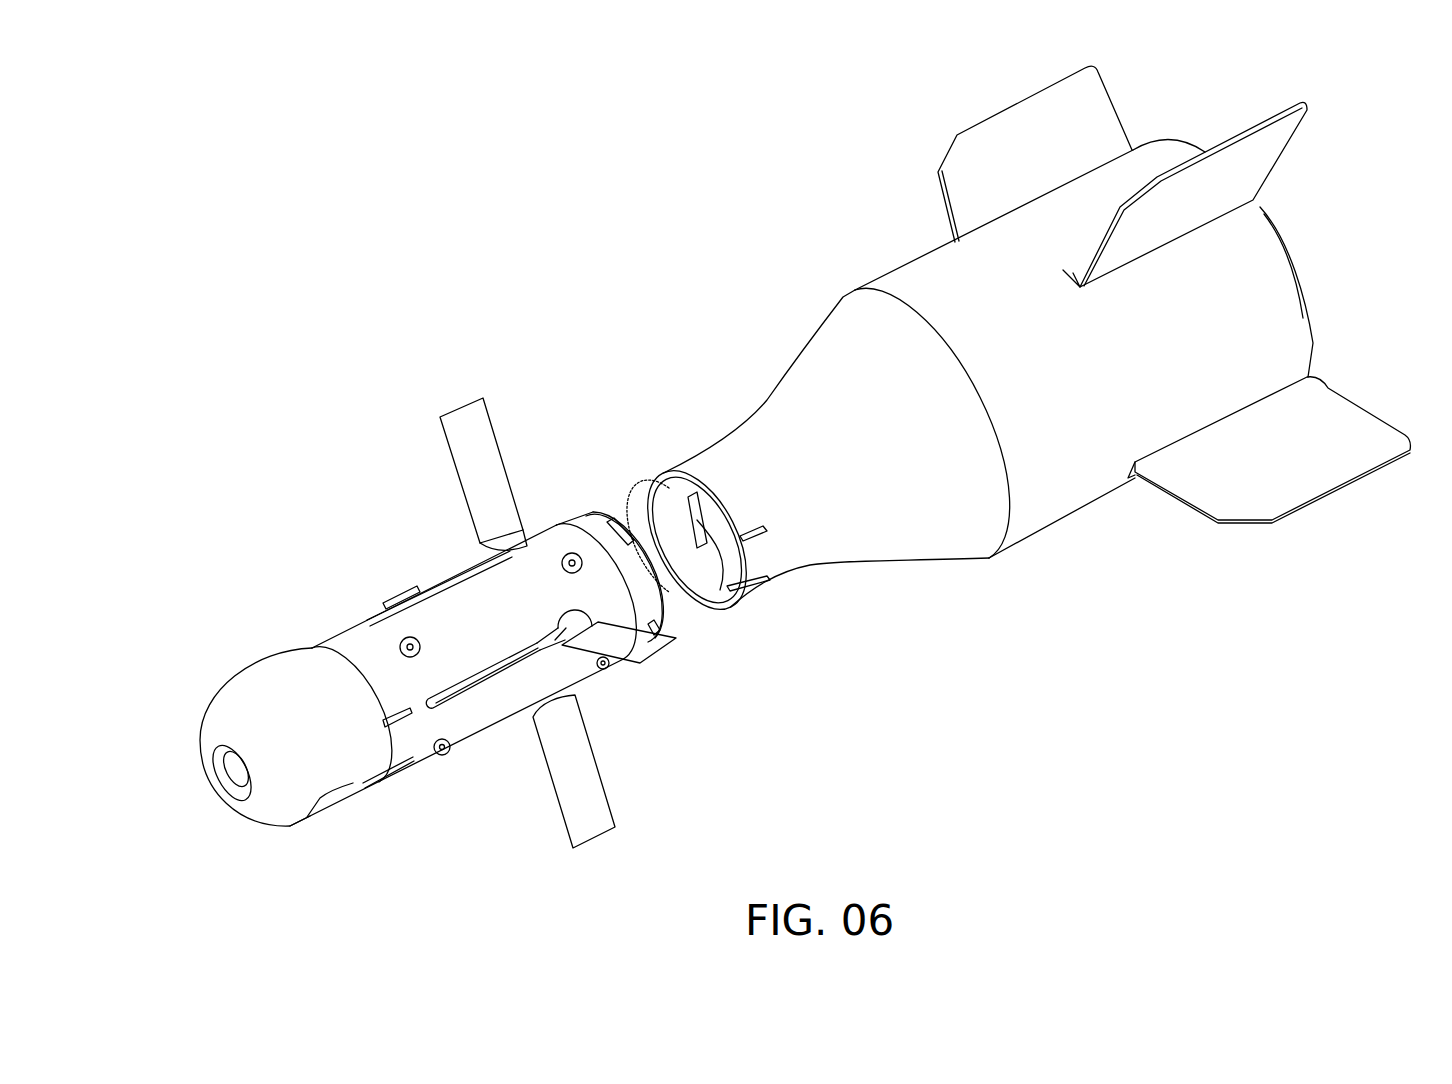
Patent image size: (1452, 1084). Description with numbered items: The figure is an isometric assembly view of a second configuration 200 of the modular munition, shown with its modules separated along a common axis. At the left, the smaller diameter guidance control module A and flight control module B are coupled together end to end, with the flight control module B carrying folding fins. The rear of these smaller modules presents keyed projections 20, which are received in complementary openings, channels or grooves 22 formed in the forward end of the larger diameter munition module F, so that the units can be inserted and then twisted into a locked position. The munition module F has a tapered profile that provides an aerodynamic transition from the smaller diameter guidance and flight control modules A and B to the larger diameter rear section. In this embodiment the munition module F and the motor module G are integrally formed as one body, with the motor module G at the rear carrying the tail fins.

The second configuration 200 is at (317, 244).
The guidance control module A is at (252, 668).
The flight control module B is at (349, 620).
The keyed projections 20 is at (613, 513).
The openings, channels or grooves 22 is at (693, 517).
The munition module F is at (727, 427).
The motor module G is at (888, 268).